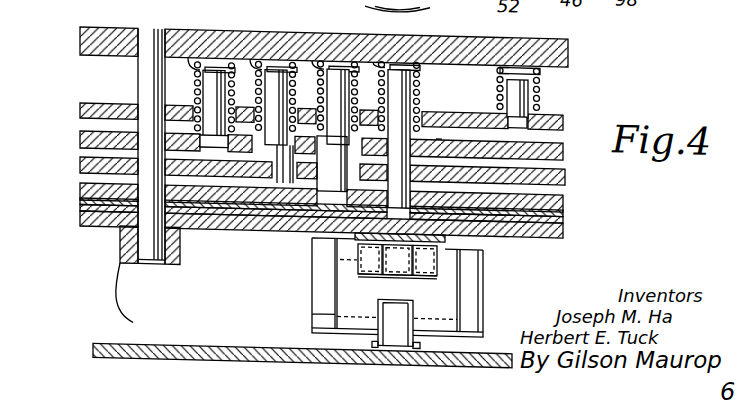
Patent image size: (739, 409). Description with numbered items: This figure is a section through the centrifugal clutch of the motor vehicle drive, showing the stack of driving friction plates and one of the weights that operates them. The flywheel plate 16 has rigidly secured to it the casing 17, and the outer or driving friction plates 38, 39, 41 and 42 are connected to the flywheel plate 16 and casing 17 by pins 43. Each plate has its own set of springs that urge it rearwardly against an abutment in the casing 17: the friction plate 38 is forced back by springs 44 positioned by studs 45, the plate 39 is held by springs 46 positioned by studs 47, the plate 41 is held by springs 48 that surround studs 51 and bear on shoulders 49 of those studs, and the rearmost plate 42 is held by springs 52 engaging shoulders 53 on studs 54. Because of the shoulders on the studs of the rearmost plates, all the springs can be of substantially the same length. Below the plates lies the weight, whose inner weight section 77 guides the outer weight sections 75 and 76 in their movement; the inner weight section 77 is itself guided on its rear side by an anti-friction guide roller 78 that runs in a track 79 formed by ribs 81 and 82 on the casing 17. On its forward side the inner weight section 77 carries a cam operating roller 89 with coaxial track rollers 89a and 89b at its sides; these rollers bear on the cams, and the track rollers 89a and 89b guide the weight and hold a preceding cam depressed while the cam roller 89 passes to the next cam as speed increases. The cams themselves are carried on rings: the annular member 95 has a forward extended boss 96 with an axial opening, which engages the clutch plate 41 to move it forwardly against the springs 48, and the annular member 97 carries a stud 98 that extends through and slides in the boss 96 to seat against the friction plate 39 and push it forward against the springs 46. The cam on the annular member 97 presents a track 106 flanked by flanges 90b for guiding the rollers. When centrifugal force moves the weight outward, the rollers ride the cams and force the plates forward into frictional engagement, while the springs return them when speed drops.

The flywheel plate 16 is at (79, 28).
The casing 17 is at (113, 342).
The pins 43 is at (145, 78).
The friction plate 38 is at (562, 106).
The friction plate 39 is at (562, 134).
The friction plate 41 is at (565, 160).
The friction plate 42 is at (562, 186).
The annular member 95 is at (565, 202).
The annular member 97 is at (565, 214).
The springs 44 is at (535, 71).
The studs 45 is at (538, 80).
The springs 46 is at (185, 60).
The studs 47 is at (212, 74).
The springs 48 is at (251, 60).
The shoulders 49 is at (275, 160).
The studs 51 is at (276, 68).
The springs 52 is at (340, 77).
The shoulders 53 is at (332, 164).
The studs 54 is at (336, 74).
The boss 96 is at (460, 138).
The stud 98 is at (438, 129).
The housing wall 75 is at (305, 295).
The housing inner wall 76 is at (312, 302).
The inner weight section 77 is at (343, 294).
The anti-friction guide roller 78 is at (353, 330).
The track 79 is at (397, 340).
The rib 81 is at (377, 336).
The rib 82 is at (415, 340).
The cam operating roller 89 is at (395, 262).
The track roller 89a is at (370, 261).
The track roller 89b is at (427, 266).
The flanges 90b is at (437, 236).
The track 106 is at (455, 245).